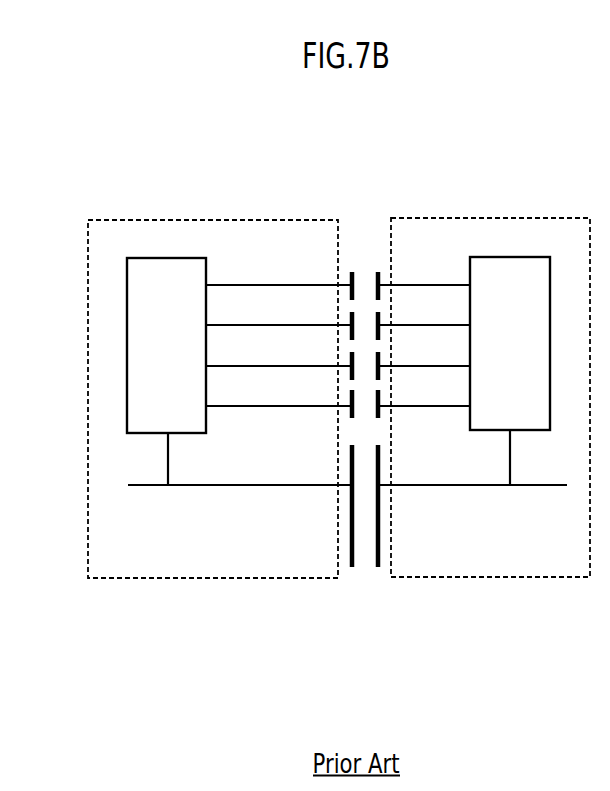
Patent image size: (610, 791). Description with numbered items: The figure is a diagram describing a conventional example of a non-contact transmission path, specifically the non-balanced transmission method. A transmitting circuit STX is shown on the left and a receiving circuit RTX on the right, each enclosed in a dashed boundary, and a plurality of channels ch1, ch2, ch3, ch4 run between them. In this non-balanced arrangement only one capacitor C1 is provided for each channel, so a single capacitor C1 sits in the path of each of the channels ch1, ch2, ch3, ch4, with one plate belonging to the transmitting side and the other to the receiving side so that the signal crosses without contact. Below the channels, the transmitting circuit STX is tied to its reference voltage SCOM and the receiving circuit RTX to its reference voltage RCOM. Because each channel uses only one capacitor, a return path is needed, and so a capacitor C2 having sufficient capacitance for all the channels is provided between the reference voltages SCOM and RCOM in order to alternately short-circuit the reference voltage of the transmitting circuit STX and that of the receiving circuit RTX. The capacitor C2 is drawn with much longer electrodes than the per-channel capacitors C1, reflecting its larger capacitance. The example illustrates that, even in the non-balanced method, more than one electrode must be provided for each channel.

The capacitor C1 is at (362, 262).
The capacitor C2 is at (365, 565).
The transmitting circuit STX is at (213, 376).
The receiving circuit RTX is at (490, 374).
The channel ch1 is at (338, 268).
The channel ch2 is at (338, 309).
The channel ch3 is at (338, 354).
The channel ch4 is at (338, 394).
The reference voltage of the transmitting circuit SCOM is at (239, 468).
The reference voltage of the receiving circuit RCOM is at (473, 468).